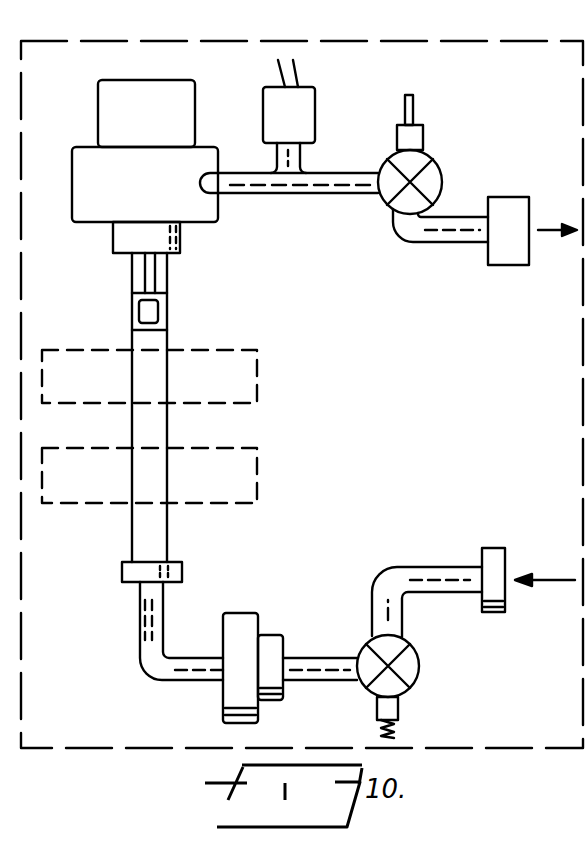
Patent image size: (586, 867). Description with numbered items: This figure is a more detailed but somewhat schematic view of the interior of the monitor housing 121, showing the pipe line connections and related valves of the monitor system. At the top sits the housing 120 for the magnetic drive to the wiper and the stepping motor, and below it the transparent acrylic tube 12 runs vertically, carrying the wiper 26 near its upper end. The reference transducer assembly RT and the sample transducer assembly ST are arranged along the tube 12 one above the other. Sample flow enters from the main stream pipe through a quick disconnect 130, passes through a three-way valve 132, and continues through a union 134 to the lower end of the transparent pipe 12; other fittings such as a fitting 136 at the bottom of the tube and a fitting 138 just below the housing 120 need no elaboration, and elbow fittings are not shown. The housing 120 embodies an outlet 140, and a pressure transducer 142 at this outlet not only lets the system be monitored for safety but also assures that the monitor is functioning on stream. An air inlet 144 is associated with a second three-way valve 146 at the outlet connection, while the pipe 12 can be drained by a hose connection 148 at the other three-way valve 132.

The system enclosure 121 is at (455, 38).
The housing 120 is at (83, 153).
The fitting 138 is at (180, 238).
The transparent acrylic tube 12 is at (132, 525).
The wiper 26 is at (159, 312).
The reference transducer assembly RT is at (245, 349).
The sample transducer assembly ST is at (245, 447).
The fitting 136 is at (178, 562).
The union 134 is at (247, 618).
The three-way valve 132 is at (420, 663).
The quick disconnect 130 is at (493, 548).
The hose connection 148 is at (398, 707).
The outlet 140 is at (283, 195).
The pressure transducer 142 is at (315, 105).
The air inlet 144 is at (413, 102).
The three-way valve 146 is at (437, 163).